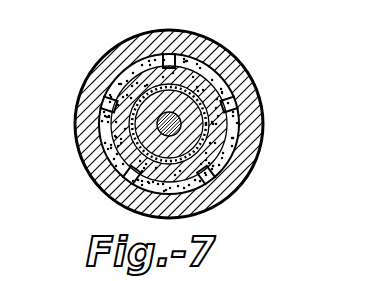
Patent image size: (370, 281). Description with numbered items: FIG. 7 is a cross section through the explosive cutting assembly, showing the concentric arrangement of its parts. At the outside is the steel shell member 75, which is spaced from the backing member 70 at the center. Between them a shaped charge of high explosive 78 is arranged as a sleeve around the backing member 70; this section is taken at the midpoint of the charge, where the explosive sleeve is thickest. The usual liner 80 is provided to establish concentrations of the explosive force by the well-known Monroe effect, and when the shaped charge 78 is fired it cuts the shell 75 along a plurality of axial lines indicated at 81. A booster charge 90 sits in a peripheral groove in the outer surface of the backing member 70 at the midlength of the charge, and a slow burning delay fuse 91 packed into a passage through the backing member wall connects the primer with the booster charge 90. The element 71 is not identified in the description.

The hub 70 is at (98, 133).
The shaft 71 is at (98, 154).
The housing 75 is at (122, 45).
The sleeve 78 is at (224, 165).
The bearing liner 80 is at (238, 126).
The locking tab 81 is at (171, 56).
The bearing ring 90 is at (232, 139).
The resilient layer 91 is at (232, 62).